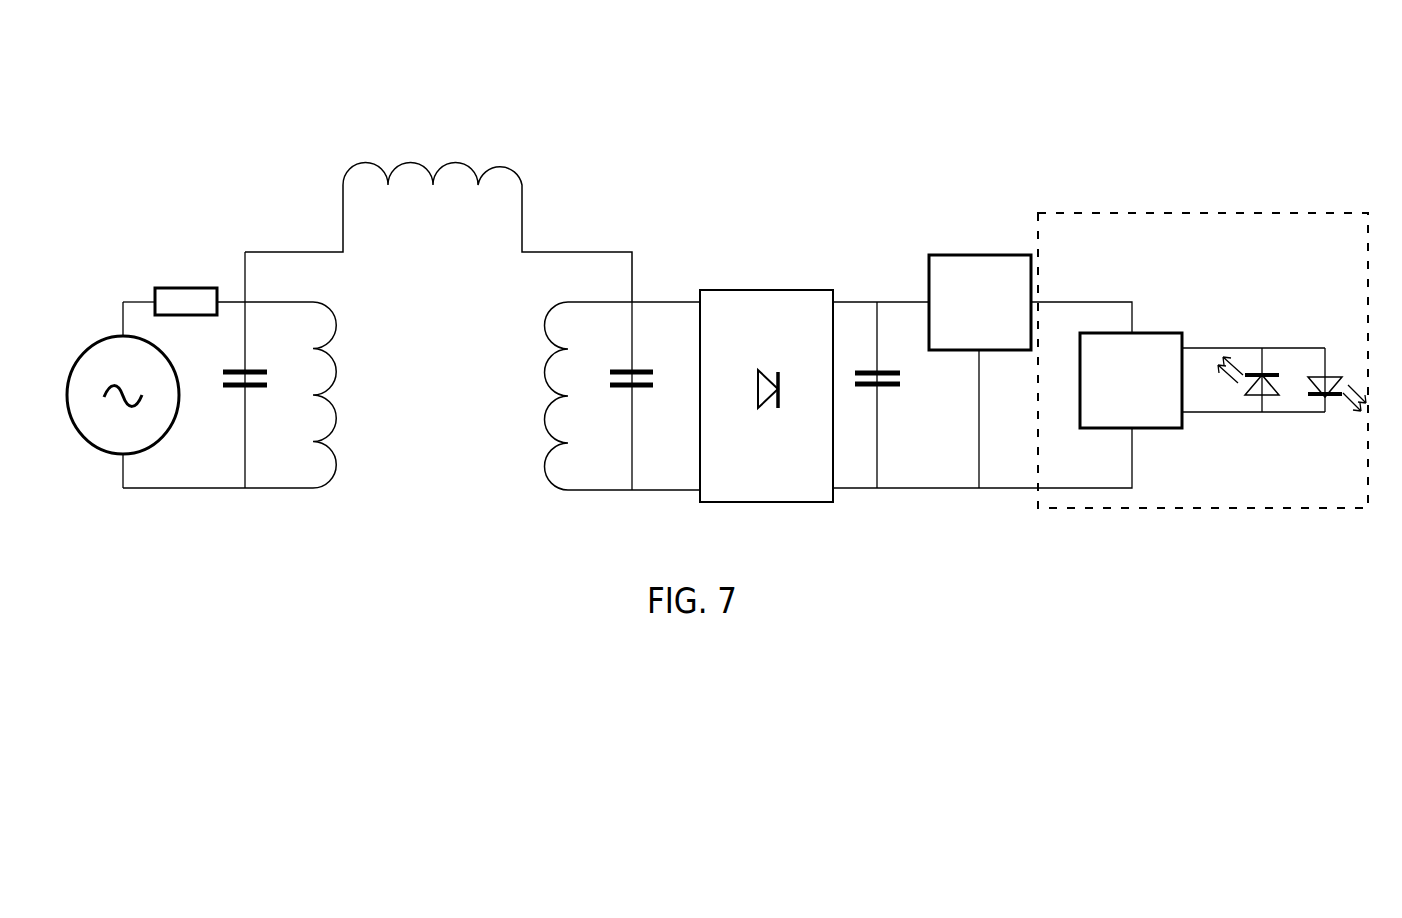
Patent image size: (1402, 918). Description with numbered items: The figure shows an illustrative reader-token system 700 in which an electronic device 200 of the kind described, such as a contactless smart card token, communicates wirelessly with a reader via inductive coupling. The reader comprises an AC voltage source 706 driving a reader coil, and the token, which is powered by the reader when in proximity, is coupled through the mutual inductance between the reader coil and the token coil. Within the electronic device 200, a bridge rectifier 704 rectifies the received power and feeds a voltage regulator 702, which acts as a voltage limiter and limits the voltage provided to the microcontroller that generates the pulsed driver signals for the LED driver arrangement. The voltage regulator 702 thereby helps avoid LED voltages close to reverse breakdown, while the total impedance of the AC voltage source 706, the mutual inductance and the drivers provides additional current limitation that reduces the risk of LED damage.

The reader-token system 700 is at (290, 128).
The AC voltage source 706 is at (93, 343).
The bridge rectifier 704 is at (772, 288).
The voltage regulator 702 is at (989, 254).
The electronic device 200 is at (1160, 211).